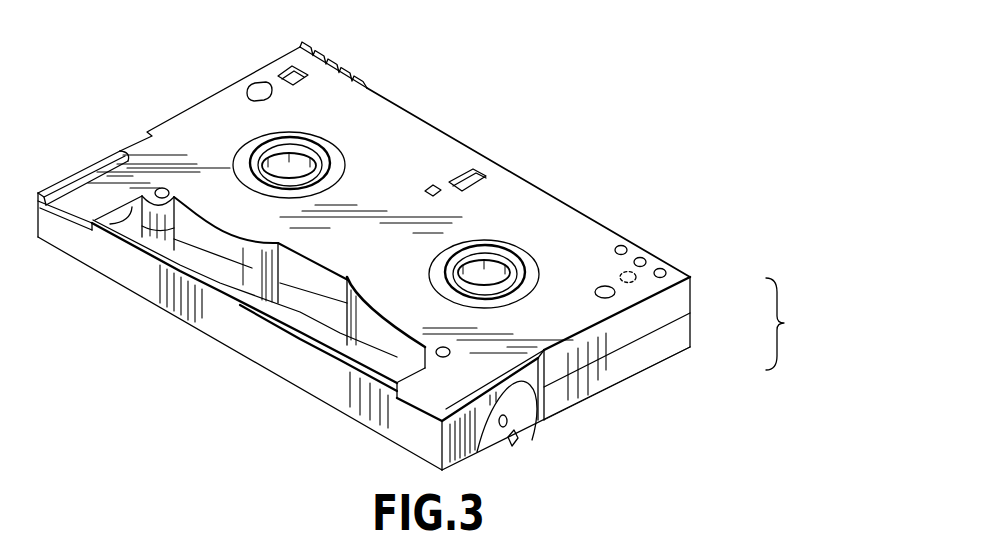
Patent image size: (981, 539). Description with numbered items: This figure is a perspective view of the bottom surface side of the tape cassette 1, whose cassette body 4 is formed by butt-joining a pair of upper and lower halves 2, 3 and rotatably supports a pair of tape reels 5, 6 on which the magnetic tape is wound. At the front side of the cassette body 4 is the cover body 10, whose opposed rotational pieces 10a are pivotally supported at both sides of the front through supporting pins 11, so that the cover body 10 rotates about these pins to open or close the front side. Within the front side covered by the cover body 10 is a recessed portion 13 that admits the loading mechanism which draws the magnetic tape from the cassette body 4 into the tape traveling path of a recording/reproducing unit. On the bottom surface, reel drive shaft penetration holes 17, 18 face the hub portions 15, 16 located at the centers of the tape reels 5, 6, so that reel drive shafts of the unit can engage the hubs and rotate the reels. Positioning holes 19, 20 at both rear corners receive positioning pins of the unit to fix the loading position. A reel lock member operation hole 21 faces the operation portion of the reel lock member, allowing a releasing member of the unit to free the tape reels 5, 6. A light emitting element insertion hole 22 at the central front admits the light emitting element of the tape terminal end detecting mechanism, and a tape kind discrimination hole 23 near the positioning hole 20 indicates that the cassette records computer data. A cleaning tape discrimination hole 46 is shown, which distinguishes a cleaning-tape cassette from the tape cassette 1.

The tape cassette 1 is at (538, 69).
The upper half 2 is at (687, 333).
The lower half 3 is at (687, 295).
The cassette body 4 is at (810, 332).
The tape reel 5 is at (320, 175).
The tape reel 6 is at (530, 280).
The cover body 10 is at (305, 372).
The rotational piece 10a is at (67, 176).
The supporting pin 11 is at (508, 423).
The recessed portion 13 is at (233, 287).
The hub portion 15 is at (257, 163).
The hub portion 16 is at (453, 252).
The reel drive shaft penetration hole 17 is at (300, 136).
The reel drive shaft penetration hole 18 is at (507, 245).
The positioning hole 19 is at (607, 286).
The positioning hole 20 is at (258, 83).
The reel lock member operation hole 21 is at (476, 172).
The light emitting element insertion hole 22 is at (333, 272).
The tape kind discrimination hole 23 is at (302, 67).
The cleaning tape discrimination hole 46 is at (631, 284).